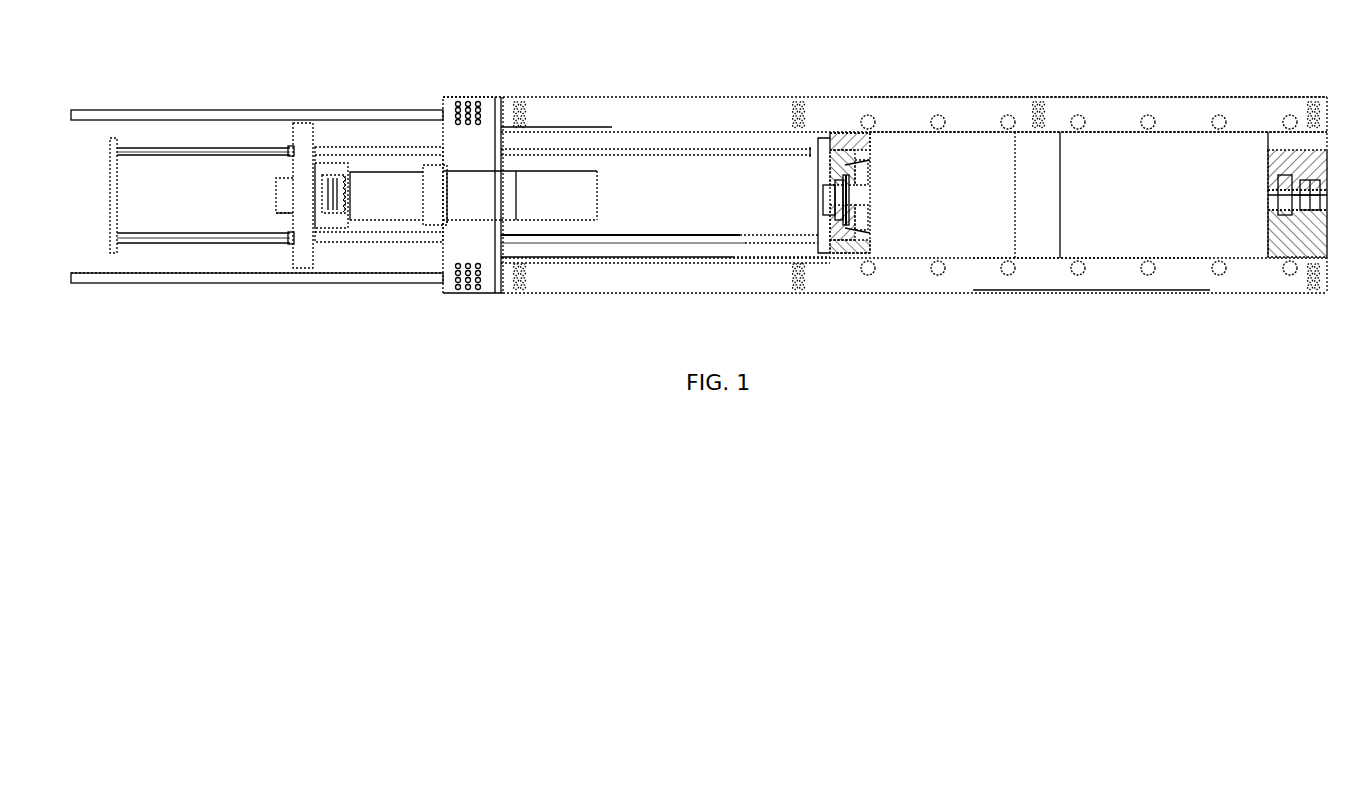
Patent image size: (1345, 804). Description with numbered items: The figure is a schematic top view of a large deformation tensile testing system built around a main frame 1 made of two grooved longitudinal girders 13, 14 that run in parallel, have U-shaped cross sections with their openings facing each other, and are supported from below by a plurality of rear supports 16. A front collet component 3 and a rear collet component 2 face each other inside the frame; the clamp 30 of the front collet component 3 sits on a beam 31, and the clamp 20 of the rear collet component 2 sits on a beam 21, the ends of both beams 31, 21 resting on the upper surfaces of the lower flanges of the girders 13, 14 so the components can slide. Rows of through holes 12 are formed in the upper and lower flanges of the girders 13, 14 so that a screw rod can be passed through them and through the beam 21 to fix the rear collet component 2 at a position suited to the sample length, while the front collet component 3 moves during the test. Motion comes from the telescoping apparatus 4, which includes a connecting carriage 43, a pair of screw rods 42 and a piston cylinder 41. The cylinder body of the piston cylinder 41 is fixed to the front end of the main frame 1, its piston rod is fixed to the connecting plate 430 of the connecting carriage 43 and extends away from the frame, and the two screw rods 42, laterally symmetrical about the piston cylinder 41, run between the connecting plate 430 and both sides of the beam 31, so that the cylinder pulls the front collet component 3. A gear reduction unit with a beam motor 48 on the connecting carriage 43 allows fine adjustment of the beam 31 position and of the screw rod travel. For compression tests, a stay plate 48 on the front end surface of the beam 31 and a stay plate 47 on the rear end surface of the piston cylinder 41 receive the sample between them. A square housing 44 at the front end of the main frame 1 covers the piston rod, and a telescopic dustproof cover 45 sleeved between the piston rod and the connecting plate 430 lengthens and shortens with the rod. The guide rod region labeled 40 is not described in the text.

The main frame 1 is at (1005, 92).
The through holes 12 is at (1148, 124).
The grooved longitudinal girder 13 is at (1247, 282).
The grooved longitudinal girder 14 is at (1178, 105).
The rear support 16 is at (1032, 190).
The rear collet component 2 is at (1262, 160).
The clamp 20 is at (1268, 190).
The beam 21 is at (1270, 228).
The front collet component 3 is at (878, 210).
The clamp 30 is at (868, 182).
The beam 31 is at (872, 243).
The telescoping apparatus 4 is at (315, 103).
The guide rod 40 is at (230, 238).
The piston cylinder 41 is at (397, 213).
The screw rods 42 is at (695, 150).
The connecting carriage 43 is at (278, 190).
The connecting plate 430 is at (302, 270).
The square housing 44 is at (232, 280).
The telescopic dustproof cover 45 is at (345, 160).
The stay plate 47 is at (597, 196).
The stay plate 48 is at (820, 188).